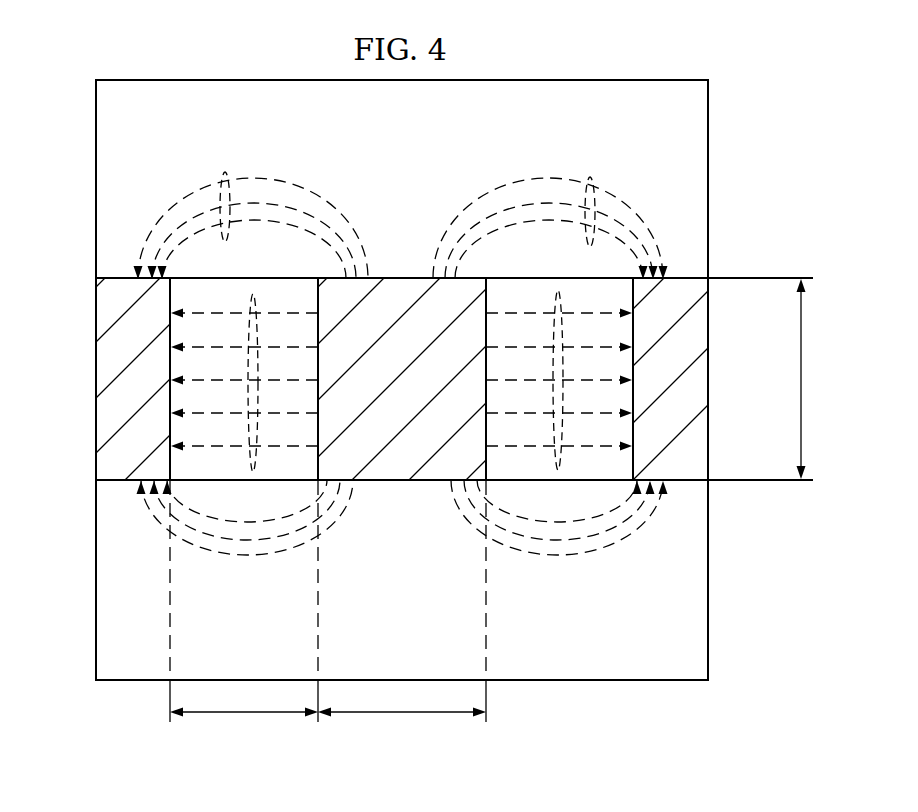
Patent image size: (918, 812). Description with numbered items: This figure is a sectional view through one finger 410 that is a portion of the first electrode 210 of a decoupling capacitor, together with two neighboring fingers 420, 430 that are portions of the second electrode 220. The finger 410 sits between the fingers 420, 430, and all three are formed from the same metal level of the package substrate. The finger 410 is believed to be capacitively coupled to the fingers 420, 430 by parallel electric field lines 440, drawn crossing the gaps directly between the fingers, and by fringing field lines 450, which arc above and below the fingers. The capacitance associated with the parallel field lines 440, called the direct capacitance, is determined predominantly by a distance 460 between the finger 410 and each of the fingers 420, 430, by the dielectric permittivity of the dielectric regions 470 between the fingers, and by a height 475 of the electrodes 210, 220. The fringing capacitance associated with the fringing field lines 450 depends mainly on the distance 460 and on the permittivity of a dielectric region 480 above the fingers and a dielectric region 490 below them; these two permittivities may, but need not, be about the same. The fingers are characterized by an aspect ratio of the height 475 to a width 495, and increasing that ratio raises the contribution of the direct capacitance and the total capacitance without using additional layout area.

The first electrode 210 is at (398, 268).
The second electrode 220 is at (88, 308).
The finger 410 is at (383, 392).
The finger 420 is at (104, 368).
The finger 430 is at (700, 378).
The parallel electric field lines 440 is at (253, 294).
The fringing field lines 450 is at (225, 172).
The distance 460 is at (245, 714).
The dielectric regions 470 is at (182, 430).
The height 475 is at (803, 376).
The dielectric region 480 is at (200, 88).
The dielectric region 490 is at (379, 591).
The width 495 is at (400, 714).